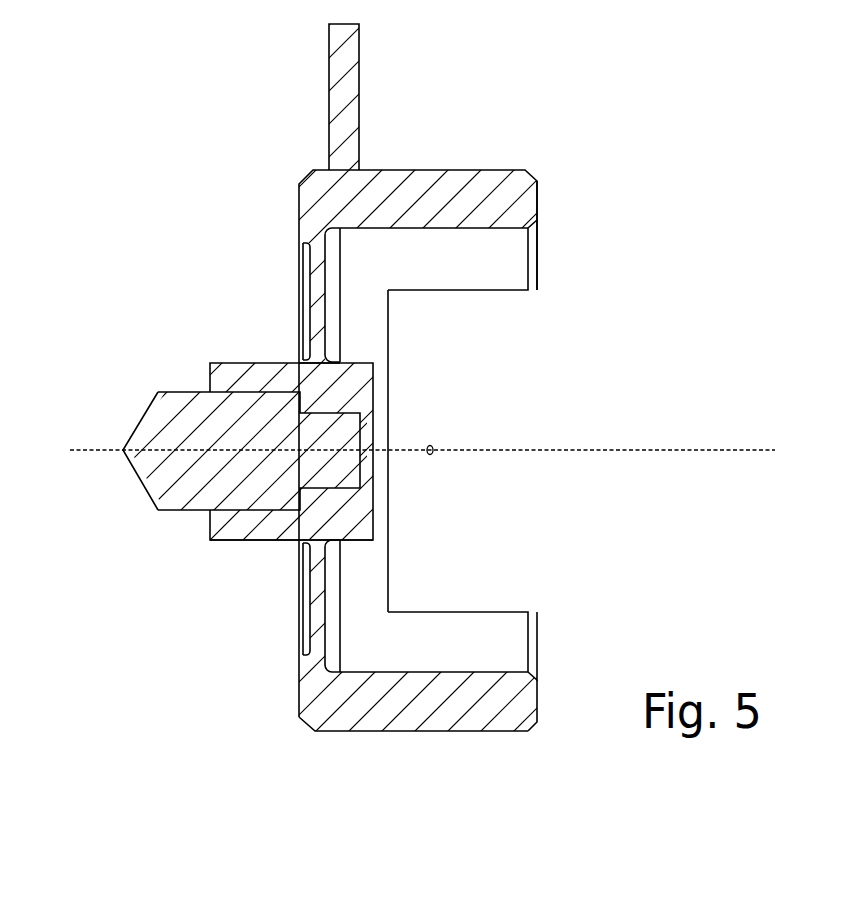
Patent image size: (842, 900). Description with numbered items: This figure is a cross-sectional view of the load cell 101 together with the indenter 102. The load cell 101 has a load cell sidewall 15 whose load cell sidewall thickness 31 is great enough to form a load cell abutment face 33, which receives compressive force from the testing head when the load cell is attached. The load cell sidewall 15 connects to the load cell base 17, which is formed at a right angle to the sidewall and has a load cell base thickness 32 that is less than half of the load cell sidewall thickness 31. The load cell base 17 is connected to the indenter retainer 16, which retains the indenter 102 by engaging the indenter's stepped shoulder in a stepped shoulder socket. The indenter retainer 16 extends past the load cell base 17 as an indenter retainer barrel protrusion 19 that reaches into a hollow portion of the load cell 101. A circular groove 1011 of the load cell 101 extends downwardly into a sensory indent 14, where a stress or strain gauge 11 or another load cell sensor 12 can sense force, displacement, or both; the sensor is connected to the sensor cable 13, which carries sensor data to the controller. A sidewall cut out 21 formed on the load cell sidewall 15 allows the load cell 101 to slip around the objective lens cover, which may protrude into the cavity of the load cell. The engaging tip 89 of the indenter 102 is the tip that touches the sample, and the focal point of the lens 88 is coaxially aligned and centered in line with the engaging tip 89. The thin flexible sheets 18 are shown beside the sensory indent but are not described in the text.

The sensor cable 13 is at (347, 88).
The load cell sidewall 15 is at (512, 190).
The load cell abutment face 33 is at (542, 205).
The sensory indent 14 is at (328, 252).
The stress or strain gauge 11 is at (332, 325).
The first elastic sheet 18 is at (302, 280).
The load cell base 17 is at (322, 347).
The indenter retainer barrel protrusion 19 is at (365, 402).
The indenter retainer 16 is at (233, 530).
The indenter 102 is at (145, 425).
The engaging tip 89 is at (123, 450).
The focal point of the lens 88 is at (435, 445).
The load cell sensor 12 is at (333, 592).
The load cell base thickness 32 is at (320, 610).
The circular groove 1011 is at (467, 678).
The sidewall cut out 21 is at (525, 610).
The load cell sidewall thickness 31 is at (542, 698).
The load cell 101 is at (347, 693).